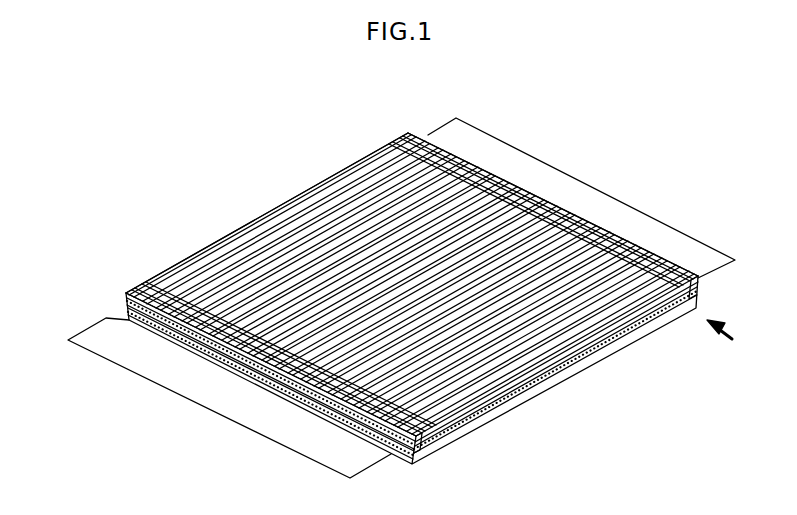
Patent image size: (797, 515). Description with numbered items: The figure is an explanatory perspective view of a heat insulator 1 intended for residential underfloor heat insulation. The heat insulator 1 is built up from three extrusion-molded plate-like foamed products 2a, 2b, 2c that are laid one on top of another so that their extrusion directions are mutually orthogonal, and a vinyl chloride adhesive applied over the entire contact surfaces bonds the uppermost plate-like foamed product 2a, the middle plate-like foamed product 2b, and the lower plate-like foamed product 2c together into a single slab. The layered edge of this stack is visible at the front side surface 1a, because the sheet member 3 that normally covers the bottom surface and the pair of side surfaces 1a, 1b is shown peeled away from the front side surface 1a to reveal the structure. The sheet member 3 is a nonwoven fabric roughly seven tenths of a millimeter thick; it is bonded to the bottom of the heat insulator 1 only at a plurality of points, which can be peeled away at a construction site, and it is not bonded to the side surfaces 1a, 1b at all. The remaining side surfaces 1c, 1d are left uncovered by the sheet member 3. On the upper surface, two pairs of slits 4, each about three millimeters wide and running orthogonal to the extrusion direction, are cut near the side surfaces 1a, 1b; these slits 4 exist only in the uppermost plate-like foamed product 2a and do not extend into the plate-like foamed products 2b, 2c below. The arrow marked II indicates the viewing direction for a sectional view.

The heat insulator 1 is at (233, 170).
The side surface 1a is at (228, 364).
The side surface 1b is at (596, 216).
The side surface 1c is at (580, 364).
The side surface 1d is at (176, 242).
The plate-like foamed product 2a is at (120, 296).
The plate-like foamed product 2b is at (120, 302).
The plate-like foamed product 2c is at (118, 308).
The sheet member 3 is at (151, 358).
The slits 4 is at (411, 446).
The section view direction II is at (729, 339).